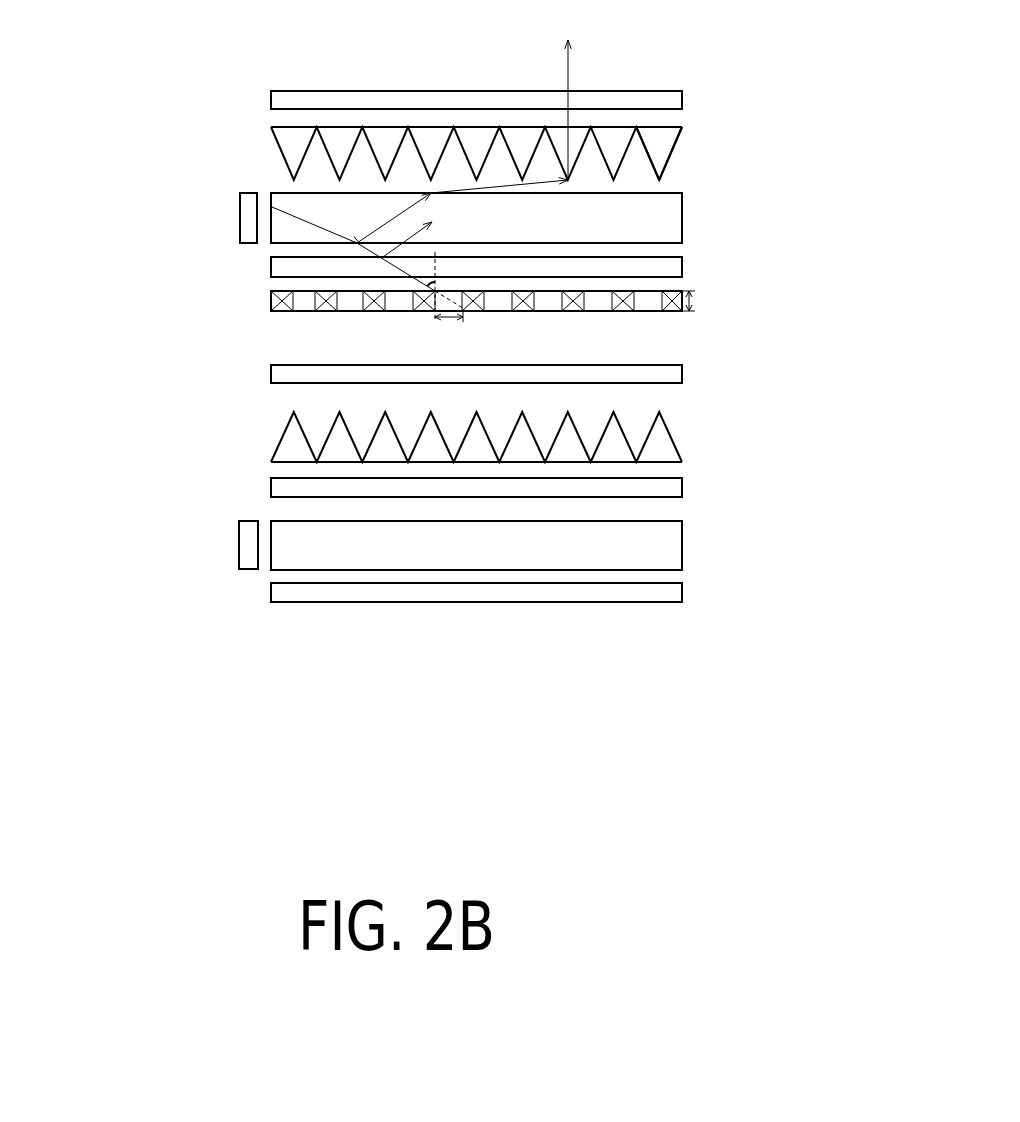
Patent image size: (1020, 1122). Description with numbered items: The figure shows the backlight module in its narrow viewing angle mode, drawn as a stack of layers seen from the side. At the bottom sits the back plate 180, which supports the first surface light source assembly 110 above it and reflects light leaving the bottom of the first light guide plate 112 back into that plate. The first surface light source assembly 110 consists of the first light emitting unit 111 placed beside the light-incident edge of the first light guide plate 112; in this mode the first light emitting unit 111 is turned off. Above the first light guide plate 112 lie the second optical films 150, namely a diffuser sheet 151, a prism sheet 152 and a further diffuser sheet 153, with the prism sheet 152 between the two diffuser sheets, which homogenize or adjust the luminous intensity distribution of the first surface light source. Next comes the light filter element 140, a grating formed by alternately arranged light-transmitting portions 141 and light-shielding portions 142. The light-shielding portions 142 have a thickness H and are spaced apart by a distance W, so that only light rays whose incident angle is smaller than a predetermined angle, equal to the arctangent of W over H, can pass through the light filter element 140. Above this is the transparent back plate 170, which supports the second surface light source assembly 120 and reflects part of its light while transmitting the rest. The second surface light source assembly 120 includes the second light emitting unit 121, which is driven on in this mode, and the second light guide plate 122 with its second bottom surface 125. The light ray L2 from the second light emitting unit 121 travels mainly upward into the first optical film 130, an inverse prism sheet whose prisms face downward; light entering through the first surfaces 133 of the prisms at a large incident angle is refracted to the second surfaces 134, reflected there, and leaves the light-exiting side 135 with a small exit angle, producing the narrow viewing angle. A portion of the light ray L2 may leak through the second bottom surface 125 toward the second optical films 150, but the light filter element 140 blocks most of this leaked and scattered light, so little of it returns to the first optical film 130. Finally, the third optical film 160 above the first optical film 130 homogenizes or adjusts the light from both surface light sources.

The first surface light source assembly 110 is at (150, 610).
The first light emitting unit 111 is at (248, 562).
The first light guide plate 112 is at (278, 558).
The second surface light source assembly 120 is at (151, 145).
The second light emitting unit 121 is at (250, 212).
The second light guide plate 122 is at (285, 210).
The second bottom surface 125 is at (661, 254).
The first optical film 130 is at (662, 152).
The first surface 133 is at (637, 170).
The second surface 134 is at (673, 172).
The light-exiting side 135 is at (628, 117).
The light filter element 140 is at (480, 363).
The light-transmitting portion 141 is at (645, 305).
The light-shielding portion 142 is at (673, 307).
The second optical film 150 is at (363, 453).
The diffuser sheet 151 is at (290, 487).
The prism sheet 152 is at (290, 444).
The diffuser sheet 153 is at (278, 373).
The third optical film 160 is at (278, 103).
The transparent back plate 170 is at (278, 267).
The back plate 180 is at (553, 590).
The light ray L2 is at (286, 216).
The distance between adjacent light-shielding portions W is at (449, 333).
The thickness of the light-shielding portion H is at (699, 303).